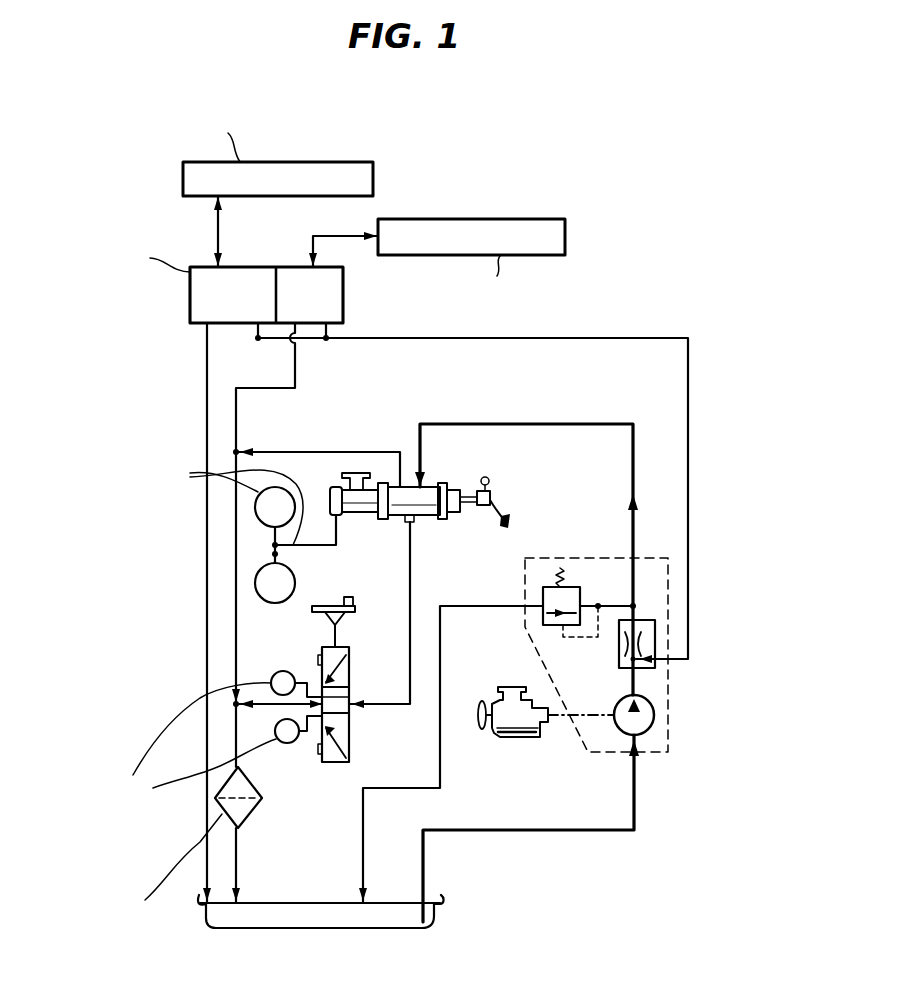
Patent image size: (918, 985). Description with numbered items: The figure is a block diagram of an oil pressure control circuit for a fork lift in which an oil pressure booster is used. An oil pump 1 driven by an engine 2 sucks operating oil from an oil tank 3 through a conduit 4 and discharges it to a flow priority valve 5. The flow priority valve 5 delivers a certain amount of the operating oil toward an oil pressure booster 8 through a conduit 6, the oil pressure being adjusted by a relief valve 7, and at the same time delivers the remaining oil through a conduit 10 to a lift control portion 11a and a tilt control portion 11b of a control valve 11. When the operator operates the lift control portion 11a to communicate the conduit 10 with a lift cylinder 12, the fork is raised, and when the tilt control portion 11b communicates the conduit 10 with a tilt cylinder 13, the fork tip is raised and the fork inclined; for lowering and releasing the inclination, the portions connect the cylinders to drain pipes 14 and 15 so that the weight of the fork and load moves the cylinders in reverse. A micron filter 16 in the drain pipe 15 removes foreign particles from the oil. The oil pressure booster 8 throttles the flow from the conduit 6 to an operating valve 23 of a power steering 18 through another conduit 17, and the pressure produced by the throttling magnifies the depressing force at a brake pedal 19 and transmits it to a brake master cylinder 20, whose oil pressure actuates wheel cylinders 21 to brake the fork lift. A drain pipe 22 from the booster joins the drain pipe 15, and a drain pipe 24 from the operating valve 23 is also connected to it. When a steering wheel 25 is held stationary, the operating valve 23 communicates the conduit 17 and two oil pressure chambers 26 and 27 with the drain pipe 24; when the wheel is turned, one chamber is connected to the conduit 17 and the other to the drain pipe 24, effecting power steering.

The oil pump 1 is at (655, 720).
The engine 2 is at (510, 738).
The oil tank 3 is at (383, 930).
The conduit 4 is at (571, 833).
The flow priority valve 5 is at (619, 662).
The conduit 6 is at (571, 426).
The relief valve 7 is at (543, 596).
The oil pressure booster 8 is at (437, 519).
The conduit 10 is at (689, 470).
The control valve 11 is at (185, 296).
The lift control portion 11a is at (248, 308).
The tilt control portion 11b is at (325, 308).
The lift cylinder 12 is at (312, 162).
The tilt cylinder 13 is at (503, 219).
The drain pipe 14 is at (207, 628).
The drain pipe 15 is at (232, 663).
The micron filter 16 is at (250, 812).
The conduit 17 is at (410, 585).
The power steering 18 is at (316, 642).
The brake pedal 19 is at (512, 522).
The brake master cylinder 20 is at (360, 516).
The wheel cylinders 21 is at (258, 522).
The drain pipe 22 is at (357, 452).
The operating valve 23 is at (334, 763).
The drain pipe 24 is at (260, 707).
The steering wheel 25 is at (336, 606).
The oil pressure chamber 26 is at (232, 663).
The oil pressure chamber 27 is at (287, 744).